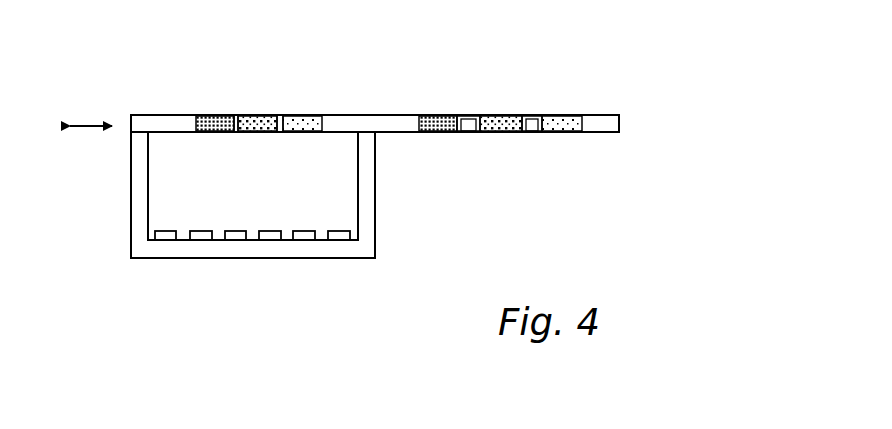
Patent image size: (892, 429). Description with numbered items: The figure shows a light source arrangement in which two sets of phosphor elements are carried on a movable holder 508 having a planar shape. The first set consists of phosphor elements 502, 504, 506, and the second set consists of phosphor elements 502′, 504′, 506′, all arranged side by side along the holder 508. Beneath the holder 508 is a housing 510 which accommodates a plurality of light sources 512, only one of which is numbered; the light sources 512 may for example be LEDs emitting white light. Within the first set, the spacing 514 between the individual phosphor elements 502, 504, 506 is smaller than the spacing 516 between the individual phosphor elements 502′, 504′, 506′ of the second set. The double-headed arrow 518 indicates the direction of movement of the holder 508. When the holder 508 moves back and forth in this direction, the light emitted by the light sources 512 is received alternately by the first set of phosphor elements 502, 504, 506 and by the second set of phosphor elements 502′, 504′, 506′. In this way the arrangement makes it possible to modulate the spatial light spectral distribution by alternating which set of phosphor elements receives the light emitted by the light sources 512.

The phosphor element 502 is at (196, 116).
The phosphor element 504 is at (263, 116).
The phosphor element 506 is at (333, 116).
The phosphor element 502′ is at (441, 115).
The phosphor element 504′ is at (503, 115).
The phosphor element 506′ is at (565, 115).
The movable holder 508 is at (641, 125).
The housing 510 is at (140, 235).
The light sources 512 is at (235, 238).
The spacing 514 is at (236, 116).
The spacing 516 is at (466, 133).
The direction of movement 518 is at (88, 108).